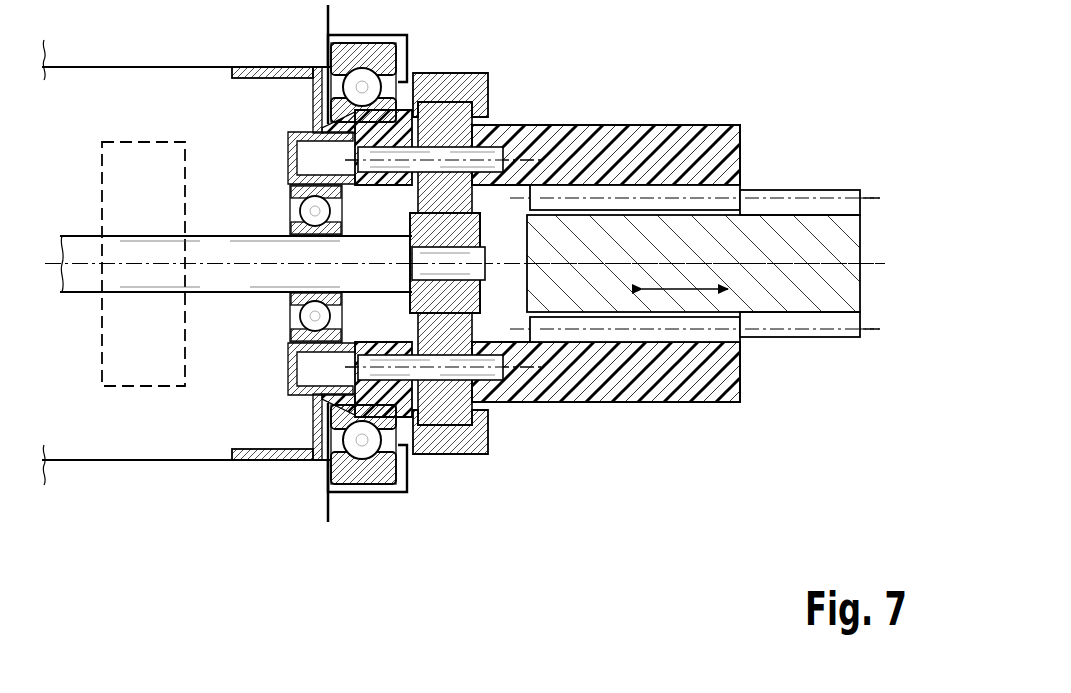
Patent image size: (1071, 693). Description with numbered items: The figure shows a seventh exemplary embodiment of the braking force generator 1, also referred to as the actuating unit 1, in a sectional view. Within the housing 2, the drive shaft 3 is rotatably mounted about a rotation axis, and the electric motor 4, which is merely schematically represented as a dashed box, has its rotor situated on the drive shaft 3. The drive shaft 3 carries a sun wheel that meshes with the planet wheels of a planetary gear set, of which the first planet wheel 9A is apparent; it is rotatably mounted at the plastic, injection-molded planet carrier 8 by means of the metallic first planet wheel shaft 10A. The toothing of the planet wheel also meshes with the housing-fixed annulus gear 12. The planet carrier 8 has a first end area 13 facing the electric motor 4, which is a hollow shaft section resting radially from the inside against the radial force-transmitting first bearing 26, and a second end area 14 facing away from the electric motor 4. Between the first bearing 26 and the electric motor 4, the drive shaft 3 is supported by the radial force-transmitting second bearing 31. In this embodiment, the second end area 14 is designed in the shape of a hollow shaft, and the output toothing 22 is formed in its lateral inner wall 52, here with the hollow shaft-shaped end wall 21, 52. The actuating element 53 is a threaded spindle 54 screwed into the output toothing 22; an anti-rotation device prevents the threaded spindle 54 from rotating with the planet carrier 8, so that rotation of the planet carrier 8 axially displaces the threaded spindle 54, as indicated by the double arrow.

The braking force generator 1 is at (198, 297).
The housing 2 is at (156, 66).
The drive shaft 3 is at (213, 247).
The electric motor 4 is at (143, 388).
The planet carrier 8 is at (598, 148).
The first planet wheel 9A is at (455, 113).
The first planet wheel shaft 10A is at (484, 153).
The annulus gear 12 is at (452, 92).
The first end area 13 is at (377, 202).
The second end area 14 is at (654, 108).
The tube 21 is at (810, 222).
The lateral inner wall 52 is at (745, 208).
The output toothing 22 is at (684, 190).
The first bearing 26 is at (366, 474).
The second bearing 31 is at (292, 228).
The actuating element 53 is at (706, 226).
The threaded spindle 54 is at (828, 243).